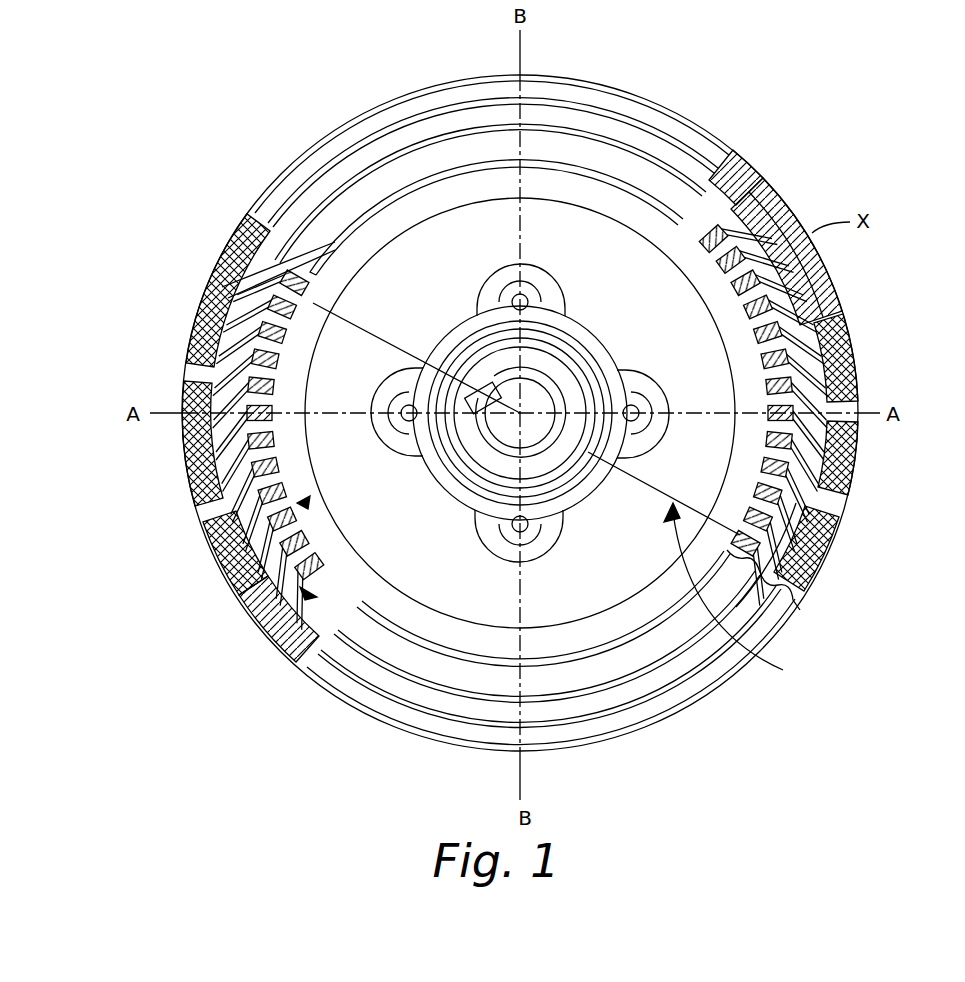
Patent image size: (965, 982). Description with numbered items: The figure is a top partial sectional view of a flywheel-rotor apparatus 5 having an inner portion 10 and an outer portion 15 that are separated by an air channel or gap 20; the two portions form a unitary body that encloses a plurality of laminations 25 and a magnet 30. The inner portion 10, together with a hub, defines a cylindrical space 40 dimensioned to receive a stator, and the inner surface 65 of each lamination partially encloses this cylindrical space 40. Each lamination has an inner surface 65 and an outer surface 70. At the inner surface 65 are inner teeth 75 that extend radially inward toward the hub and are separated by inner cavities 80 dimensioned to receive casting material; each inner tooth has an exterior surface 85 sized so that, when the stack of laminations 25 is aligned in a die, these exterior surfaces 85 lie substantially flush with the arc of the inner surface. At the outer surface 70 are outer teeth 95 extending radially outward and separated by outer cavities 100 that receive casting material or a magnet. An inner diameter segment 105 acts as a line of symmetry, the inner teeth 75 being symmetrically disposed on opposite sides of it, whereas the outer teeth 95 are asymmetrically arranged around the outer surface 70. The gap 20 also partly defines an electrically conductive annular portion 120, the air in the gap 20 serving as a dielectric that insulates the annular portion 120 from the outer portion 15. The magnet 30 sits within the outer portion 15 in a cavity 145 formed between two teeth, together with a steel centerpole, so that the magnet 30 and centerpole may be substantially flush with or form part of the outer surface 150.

The flywheel-rotor apparatus 5 is at (852, 162).
The inner portion 10 is at (640, 180).
The outer portion 15 is at (720, 152).
The air channel or gap 20 is at (640, 130).
The laminations 25 is at (267, 630).
The magnet 30 is at (847, 327).
The cylindrical space 40 is at (742, 591).
The inner surface 65 is at (310, 502).
The outer surface 70 is at (193, 477).
The inner teeth 75 is at (708, 258).
The inner cavities 80 is at (770, 383).
The exterior surface 85 is at (720, 280).
The outer teeth 95 is at (242, 592).
The outer cavities 100 is at (192, 445).
The inner diameter segment 105 is at (372, 330).
The electrically conductive annular portion 120 is at (467, 637).
The cavity 145 is at (838, 287).
The outer surface 150 is at (357, 708).